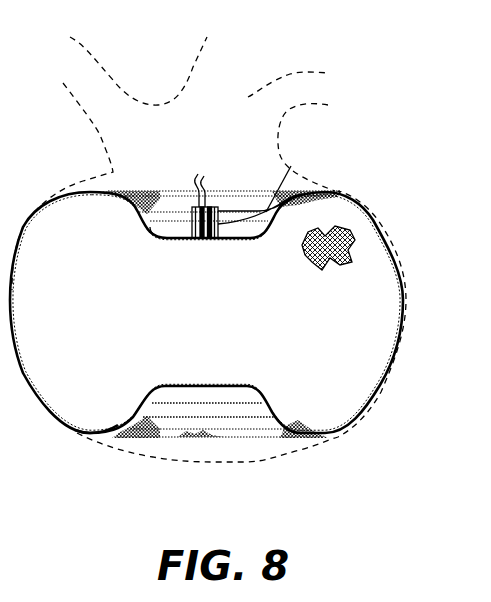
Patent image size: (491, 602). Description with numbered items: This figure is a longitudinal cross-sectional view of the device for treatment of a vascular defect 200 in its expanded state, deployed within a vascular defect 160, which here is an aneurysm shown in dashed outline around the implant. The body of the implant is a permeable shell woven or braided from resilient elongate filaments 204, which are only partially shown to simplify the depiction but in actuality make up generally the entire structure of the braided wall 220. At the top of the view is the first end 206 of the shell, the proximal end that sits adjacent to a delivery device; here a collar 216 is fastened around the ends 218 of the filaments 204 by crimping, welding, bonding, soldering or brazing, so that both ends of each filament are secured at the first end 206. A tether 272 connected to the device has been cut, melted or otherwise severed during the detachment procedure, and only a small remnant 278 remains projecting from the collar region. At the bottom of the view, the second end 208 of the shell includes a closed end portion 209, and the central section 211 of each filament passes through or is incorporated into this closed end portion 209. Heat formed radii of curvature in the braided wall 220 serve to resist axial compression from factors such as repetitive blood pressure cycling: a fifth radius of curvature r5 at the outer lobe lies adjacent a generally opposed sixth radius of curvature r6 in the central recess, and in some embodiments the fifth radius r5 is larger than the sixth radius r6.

The device for treatment of a vascular defect 200 is at (130, 179).
The resilient elongate filaments 204 is at (353, 231).
The first end 206 is at (83, 181).
The second end 208 is at (103, 432).
The closed end portion 209 is at (220, 387).
The central section 211 is at (197, 387).
The collar 216 is at (332, 192).
The ends of the filaments 218 is at (288, 168).
The braided wall 220 is at (88, 440).
The vascular defect 160 is at (296, 452).
The tether 272 is at (210, 183).
The remnant 278 is at (206, 170).
The fifth radius of curvature r5 is at (90, 202).
The sixth radius of curvature r6 is at (162, 228).